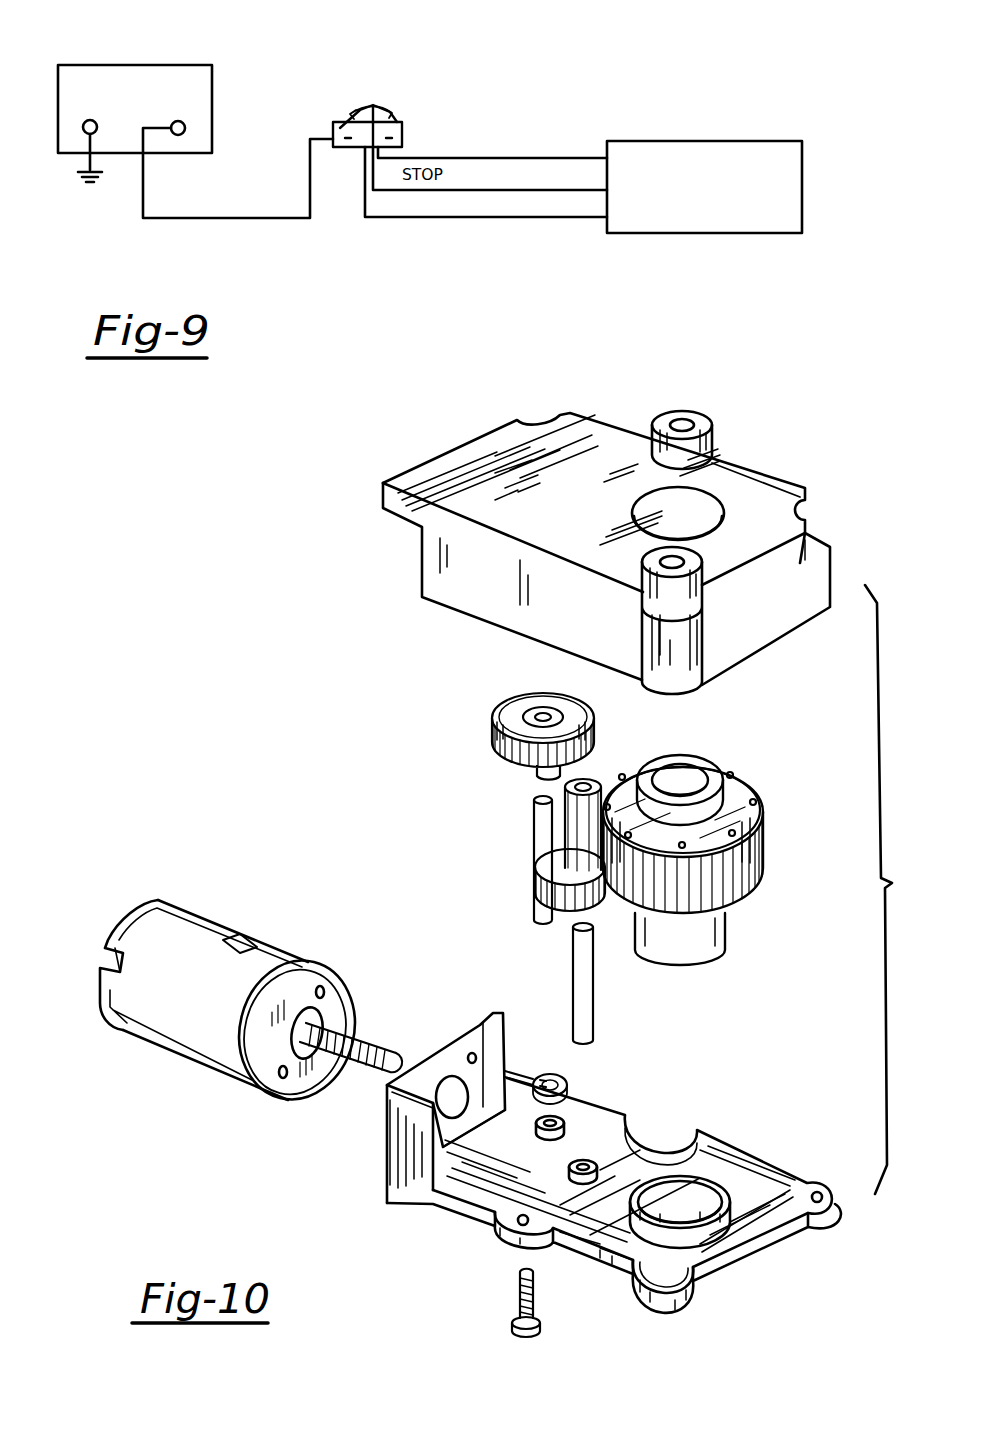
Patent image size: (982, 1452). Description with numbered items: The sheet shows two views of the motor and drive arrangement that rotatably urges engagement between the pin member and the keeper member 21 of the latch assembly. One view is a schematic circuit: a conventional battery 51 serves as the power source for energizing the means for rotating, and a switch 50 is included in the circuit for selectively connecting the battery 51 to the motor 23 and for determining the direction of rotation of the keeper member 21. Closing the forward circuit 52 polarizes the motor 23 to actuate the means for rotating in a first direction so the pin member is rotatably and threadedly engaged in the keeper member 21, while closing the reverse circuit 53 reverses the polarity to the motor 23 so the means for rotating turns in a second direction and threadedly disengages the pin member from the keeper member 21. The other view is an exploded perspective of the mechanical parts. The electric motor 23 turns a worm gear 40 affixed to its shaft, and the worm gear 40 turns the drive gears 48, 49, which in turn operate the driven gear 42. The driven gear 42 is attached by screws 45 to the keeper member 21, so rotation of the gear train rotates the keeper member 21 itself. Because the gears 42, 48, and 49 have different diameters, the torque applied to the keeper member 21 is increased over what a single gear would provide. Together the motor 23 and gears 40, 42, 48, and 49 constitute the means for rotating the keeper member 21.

In FIG. 9, the battery 51 is at (172, 65).
In FIG. 9, the switch 50 is at (408, 117).
In FIG. 9, the reverse circuit 53 is at (538, 152).
In FIG. 9, the forward circuit 52 is at (471, 229).
In FIG. 9, the electric motor 23 is at (722, 145).
In FIG. 10, the electric motor 23 is at (200, 925).
In FIG. 10, the drive gear 48 is at (495, 717).
In FIG. 10, the keeper member 21 is at (705, 762).
In FIG. 10, the screws 45 is at (757, 802).
In FIG. 10, the driven gear 42 is at (767, 863).
In FIG. 10, the drive gear 49 is at (530, 873).
In FIG. 10, the worm gear 40 is at (353, 1033).